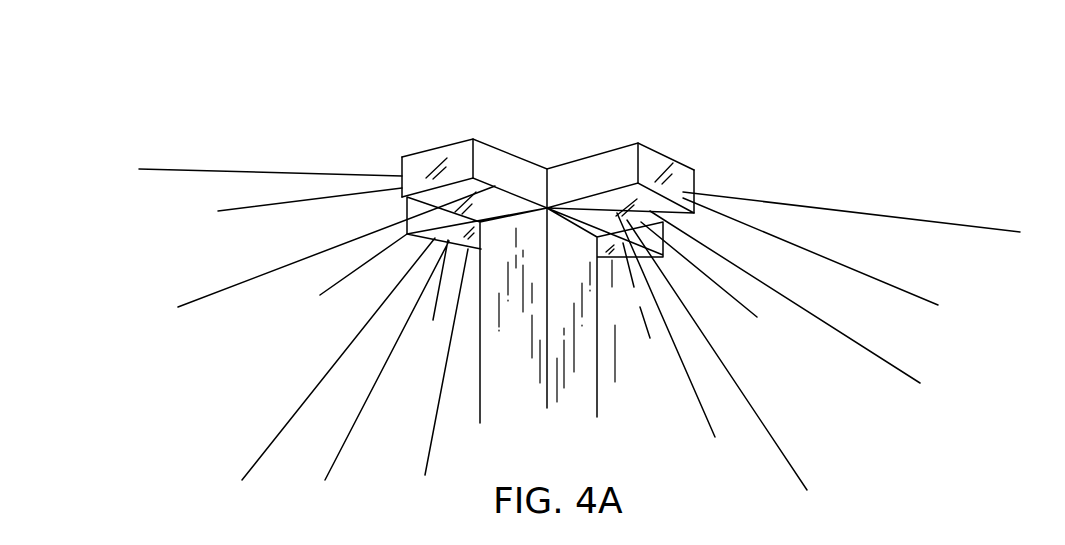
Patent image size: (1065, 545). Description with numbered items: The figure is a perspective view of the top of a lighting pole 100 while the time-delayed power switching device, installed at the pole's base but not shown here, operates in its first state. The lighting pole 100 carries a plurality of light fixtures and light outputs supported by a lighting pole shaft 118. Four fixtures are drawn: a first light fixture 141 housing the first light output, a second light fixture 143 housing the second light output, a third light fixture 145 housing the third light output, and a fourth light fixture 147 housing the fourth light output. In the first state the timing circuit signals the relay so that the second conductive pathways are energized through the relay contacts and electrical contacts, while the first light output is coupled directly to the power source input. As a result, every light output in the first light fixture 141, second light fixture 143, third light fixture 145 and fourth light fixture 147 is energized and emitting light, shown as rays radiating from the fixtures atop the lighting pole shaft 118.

The lighting pole 100 is at (748, 110).
The second light fixture 143 is at (431, 158).
The first light fixture 141 is at (695, 175).
The third light fixture 145 is at (455, 248).
The fourth light fixture 147 is at (620, 258).
The lighting pole shaft 118 is at (578, 383).